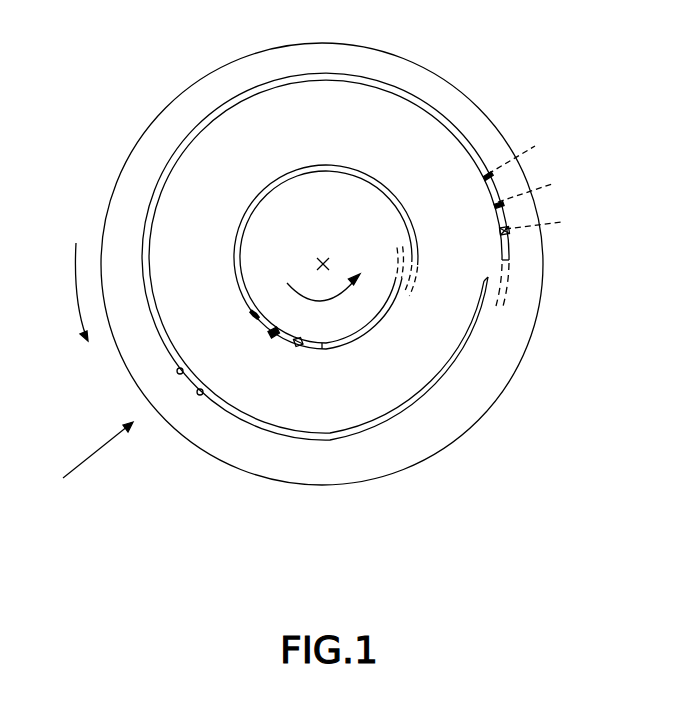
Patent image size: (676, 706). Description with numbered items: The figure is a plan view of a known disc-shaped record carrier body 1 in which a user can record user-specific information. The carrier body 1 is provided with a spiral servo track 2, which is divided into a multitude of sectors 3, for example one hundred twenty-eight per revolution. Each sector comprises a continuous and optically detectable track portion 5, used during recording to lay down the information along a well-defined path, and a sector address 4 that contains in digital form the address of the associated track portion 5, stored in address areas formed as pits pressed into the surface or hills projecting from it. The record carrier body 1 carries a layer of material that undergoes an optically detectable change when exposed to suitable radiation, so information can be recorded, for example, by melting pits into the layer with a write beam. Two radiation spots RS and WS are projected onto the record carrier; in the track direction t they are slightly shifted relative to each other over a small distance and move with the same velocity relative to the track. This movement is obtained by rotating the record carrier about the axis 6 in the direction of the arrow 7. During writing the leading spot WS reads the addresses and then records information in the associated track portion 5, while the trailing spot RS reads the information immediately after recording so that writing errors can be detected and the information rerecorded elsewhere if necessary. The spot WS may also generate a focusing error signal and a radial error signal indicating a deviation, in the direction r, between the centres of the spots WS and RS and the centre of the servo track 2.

The disc-shaped record carrier body 1 is at (441, 28).
The spiral servo track 2 is at (366, 331).
The sectors 3 is at (562, 222).
The sector address 4 is at (496, 206).
The track portion 5 is at (502, 230).
The axis 6 is at (323, 260).
The arrow 7 is at (316, 303).
The read radiation spot RS is at (177, 372).
The write radiation spot WS is at (198, 396).
The track direction t is at (78, 299).
The radial direction r is at (83, 464).